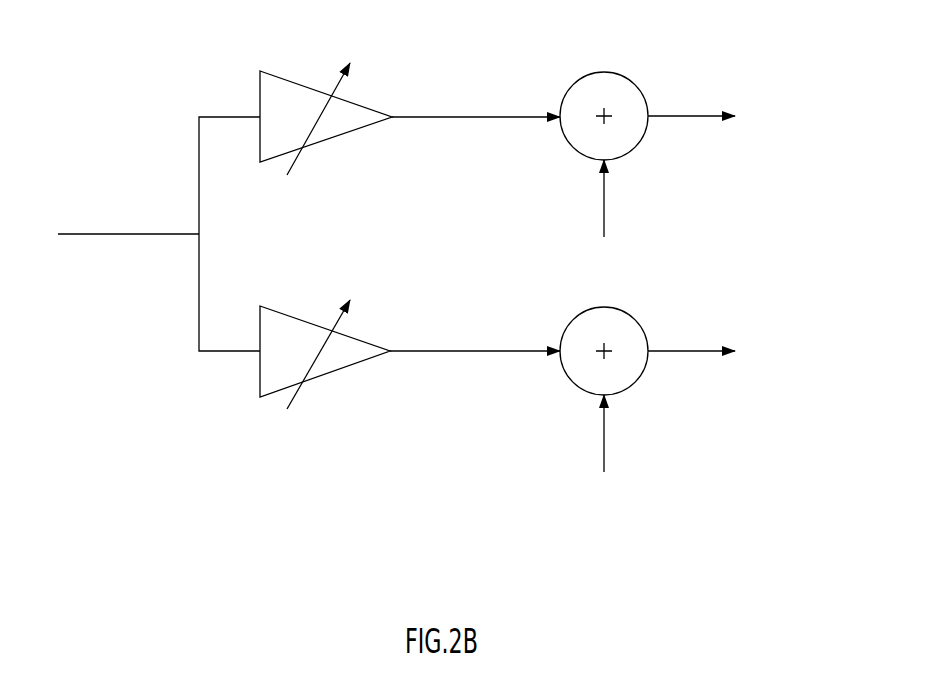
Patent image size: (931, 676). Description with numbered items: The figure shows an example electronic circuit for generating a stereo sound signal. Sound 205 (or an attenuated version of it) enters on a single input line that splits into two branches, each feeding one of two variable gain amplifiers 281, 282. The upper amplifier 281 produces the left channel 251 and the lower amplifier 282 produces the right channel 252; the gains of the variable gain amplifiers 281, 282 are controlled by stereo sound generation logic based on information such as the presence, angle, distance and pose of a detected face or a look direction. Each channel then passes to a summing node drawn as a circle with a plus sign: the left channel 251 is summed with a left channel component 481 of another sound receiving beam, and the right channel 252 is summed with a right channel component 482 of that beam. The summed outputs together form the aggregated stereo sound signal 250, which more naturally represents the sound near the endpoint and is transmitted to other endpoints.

The sound 205 is at (150, 233).
The variable gain amplifier 281 is at (277, 72).
The variable gain amplifier 282 is at (290, 313).
The left channel 251 is at (496, 116).
The right channel 252 is at (504, 351).
The left channel component 481 is at (605, 203).
The right channel component 482 is at (606, 436).
The stereo sound signal 250 is at (745, 197).